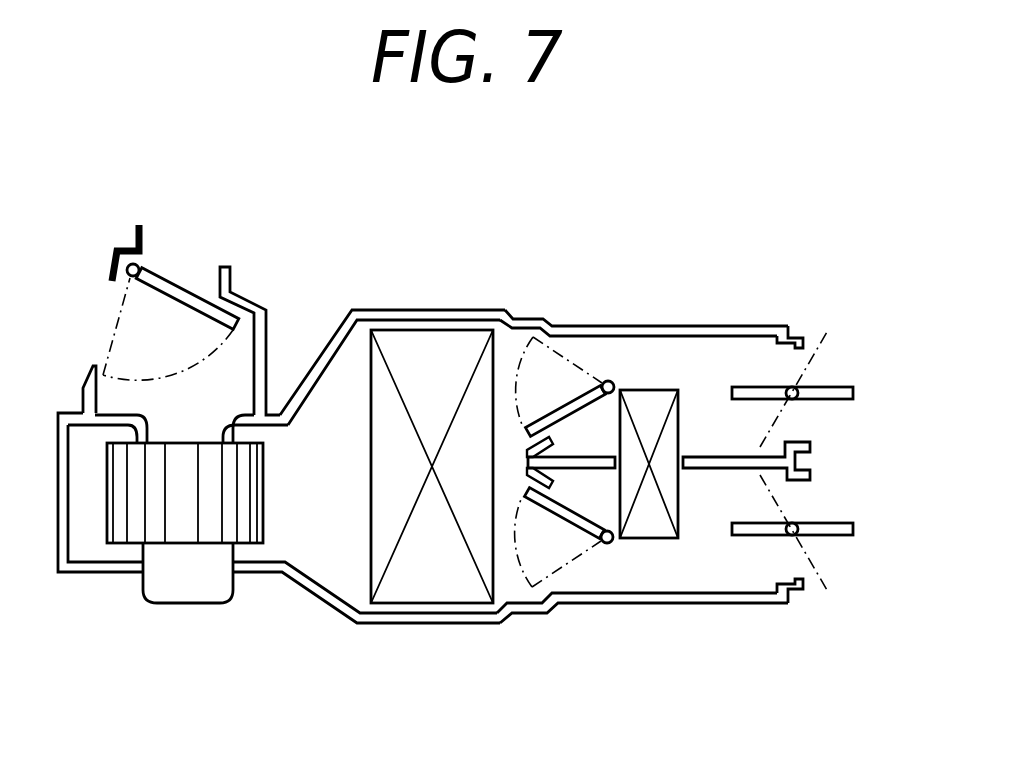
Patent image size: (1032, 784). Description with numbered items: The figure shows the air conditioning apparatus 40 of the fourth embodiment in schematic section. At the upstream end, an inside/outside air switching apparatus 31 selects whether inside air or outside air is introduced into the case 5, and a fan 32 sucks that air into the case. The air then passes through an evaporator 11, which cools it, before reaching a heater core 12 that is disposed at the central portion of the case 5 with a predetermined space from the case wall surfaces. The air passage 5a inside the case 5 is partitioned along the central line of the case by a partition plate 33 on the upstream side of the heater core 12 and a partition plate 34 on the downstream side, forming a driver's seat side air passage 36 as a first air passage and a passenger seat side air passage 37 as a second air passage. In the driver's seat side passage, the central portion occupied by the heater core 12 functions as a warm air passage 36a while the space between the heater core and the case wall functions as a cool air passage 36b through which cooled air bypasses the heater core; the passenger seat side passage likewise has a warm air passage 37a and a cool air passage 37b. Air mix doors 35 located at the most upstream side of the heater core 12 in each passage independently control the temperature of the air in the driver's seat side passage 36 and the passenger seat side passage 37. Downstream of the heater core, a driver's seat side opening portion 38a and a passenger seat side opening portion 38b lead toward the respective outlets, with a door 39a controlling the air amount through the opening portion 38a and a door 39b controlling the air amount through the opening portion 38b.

The air conditioning apparatus 40 is at (452, 238).
The inside/outside air switching apparatus 31 is at (178, 285).
The fan 32 is at (137, 528).
The case 5 is at (365, 308).
The air passage 5a is at (320, 562).
The evaporator 11 is at (413, 592).
The heater core 12 is at (652, 523).
The partition plate 33 is at (578, 466).
The partition plate 34 is at (773, 455).
The air mix door 35 is at (566, 405).
The driver's seat side air passage 36 is at (749, 352).
The warm air passage 36a is at (699, 428).
The cool air passage 36b is at (636, 350).
The passenger seat side air passage 37 is at (740, 567).
The warm air passage 37a is at (702, 497).
The cool air passage 37b is at (610, 572).
The driver's seat side opening portion 38a is at (812, 342).
The passenger seat side opening portion 38b is at (808, 578).
The door 39a is at (832, 386).
The door 39b is at (833, 522).